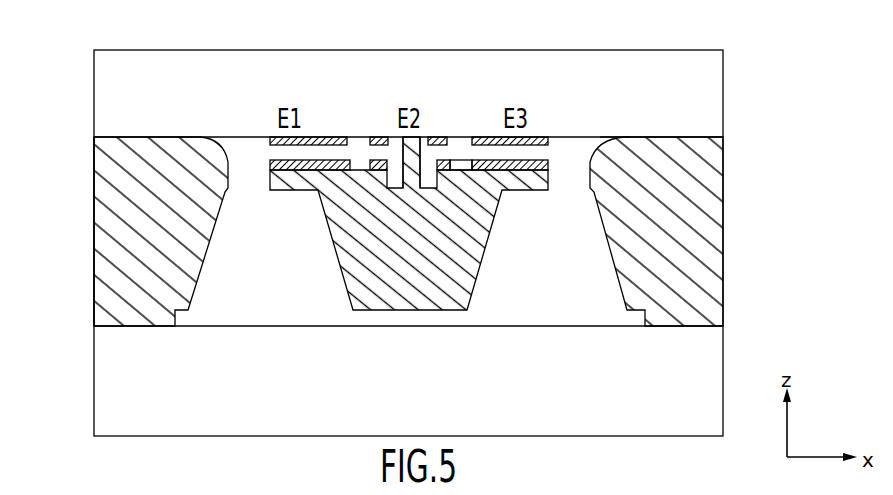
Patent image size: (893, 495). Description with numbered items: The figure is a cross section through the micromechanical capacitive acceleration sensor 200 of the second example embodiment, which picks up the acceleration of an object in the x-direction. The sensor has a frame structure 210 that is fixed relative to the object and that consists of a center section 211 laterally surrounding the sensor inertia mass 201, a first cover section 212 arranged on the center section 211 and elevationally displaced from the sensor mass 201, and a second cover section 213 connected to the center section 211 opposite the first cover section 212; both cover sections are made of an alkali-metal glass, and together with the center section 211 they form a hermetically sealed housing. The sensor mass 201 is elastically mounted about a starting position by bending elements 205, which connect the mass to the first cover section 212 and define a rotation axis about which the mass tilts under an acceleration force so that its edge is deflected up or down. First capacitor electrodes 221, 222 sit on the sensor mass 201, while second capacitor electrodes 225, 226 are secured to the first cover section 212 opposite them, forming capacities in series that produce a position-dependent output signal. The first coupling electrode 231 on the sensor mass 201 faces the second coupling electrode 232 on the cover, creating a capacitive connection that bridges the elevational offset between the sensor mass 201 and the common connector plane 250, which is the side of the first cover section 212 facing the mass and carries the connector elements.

The acceleration sensor 200 is at (62, 316).
The sensor inertia mass 201 is at (370, 268).
The bending elements 205 is at (425, 180).
The frame structure 210 is at (780, 148).
The center section 211 is at (120, 203).
The first cover section 212 is at (712, 75).
The second cover section 213 is at (703, 352).
The first capacitor electrode 221 is at (270, 158).
The first capacitor electrode 222 is at (547, 163).
The second capacitor electrode 225 is at (325, 137).
The second capacitor electrode 226 is at (480, 137).
The first coupling electrode 231 is at (383, 163).
The second coupling electrode 232 is at (380, 137).
The common connector plane 250 is at (614, 134).